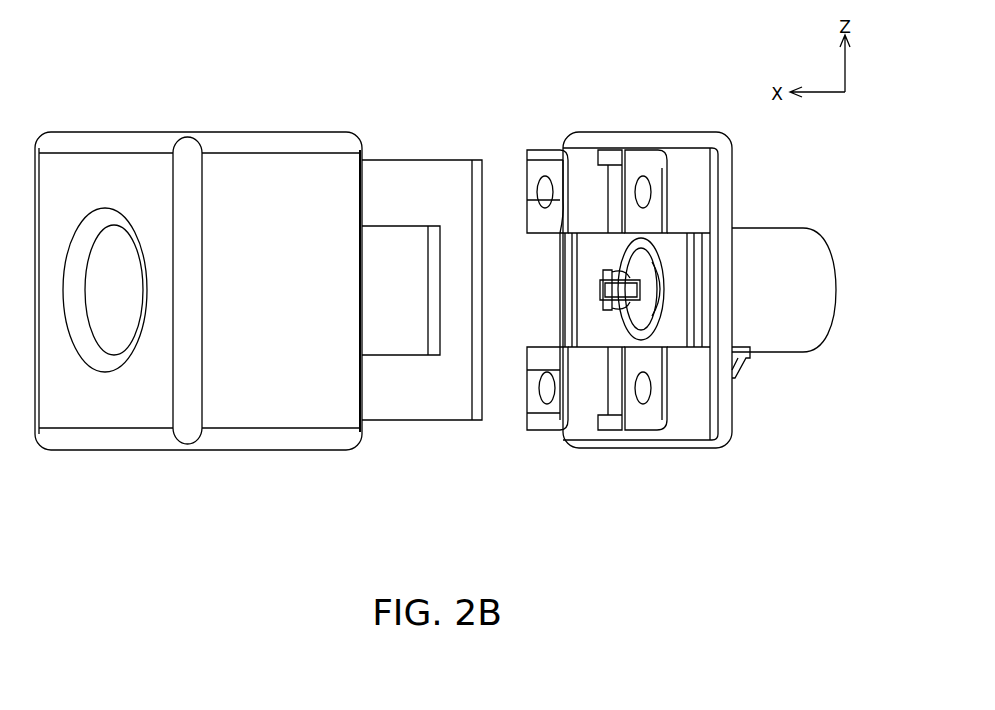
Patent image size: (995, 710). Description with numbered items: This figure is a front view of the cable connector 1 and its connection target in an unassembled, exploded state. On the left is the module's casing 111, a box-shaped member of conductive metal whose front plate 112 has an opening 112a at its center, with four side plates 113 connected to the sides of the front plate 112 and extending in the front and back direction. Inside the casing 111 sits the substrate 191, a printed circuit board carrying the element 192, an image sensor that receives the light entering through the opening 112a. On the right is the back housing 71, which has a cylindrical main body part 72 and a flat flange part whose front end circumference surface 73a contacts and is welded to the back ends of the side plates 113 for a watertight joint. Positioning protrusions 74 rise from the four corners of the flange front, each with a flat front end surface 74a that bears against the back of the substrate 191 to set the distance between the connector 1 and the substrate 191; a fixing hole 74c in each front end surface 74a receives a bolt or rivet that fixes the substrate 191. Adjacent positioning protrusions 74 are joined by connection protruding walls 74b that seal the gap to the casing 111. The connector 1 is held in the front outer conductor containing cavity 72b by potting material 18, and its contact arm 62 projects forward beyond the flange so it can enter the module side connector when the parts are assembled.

The connector 1 is at (633, 313).
The potting material 18 is at (652, 325).
The contact arm 62 is at (600, 290).
The back housing 71 is at (771, 228).
The main body part 72 is at (772, 356).
The front outer conductor containing cavity 72b is at (630, 243).
The front end circumference surface 73a is at (618, 147).
The positioning protrusion 74 is at (682, 153).
The front end surface 74a is at (548, 162).
The connection protruding wall 74b is at (560, 322).
The fixing hole 74c is at (543, 185).
The casing 111 is at (298, 131).
The front plate 112 is at (82, 178).
The opening 112a is at (118, 347).
The side plate 113 is at (277, 410).
The substrate 191 is at (420, 168).
The element 192 is at (403, 348).